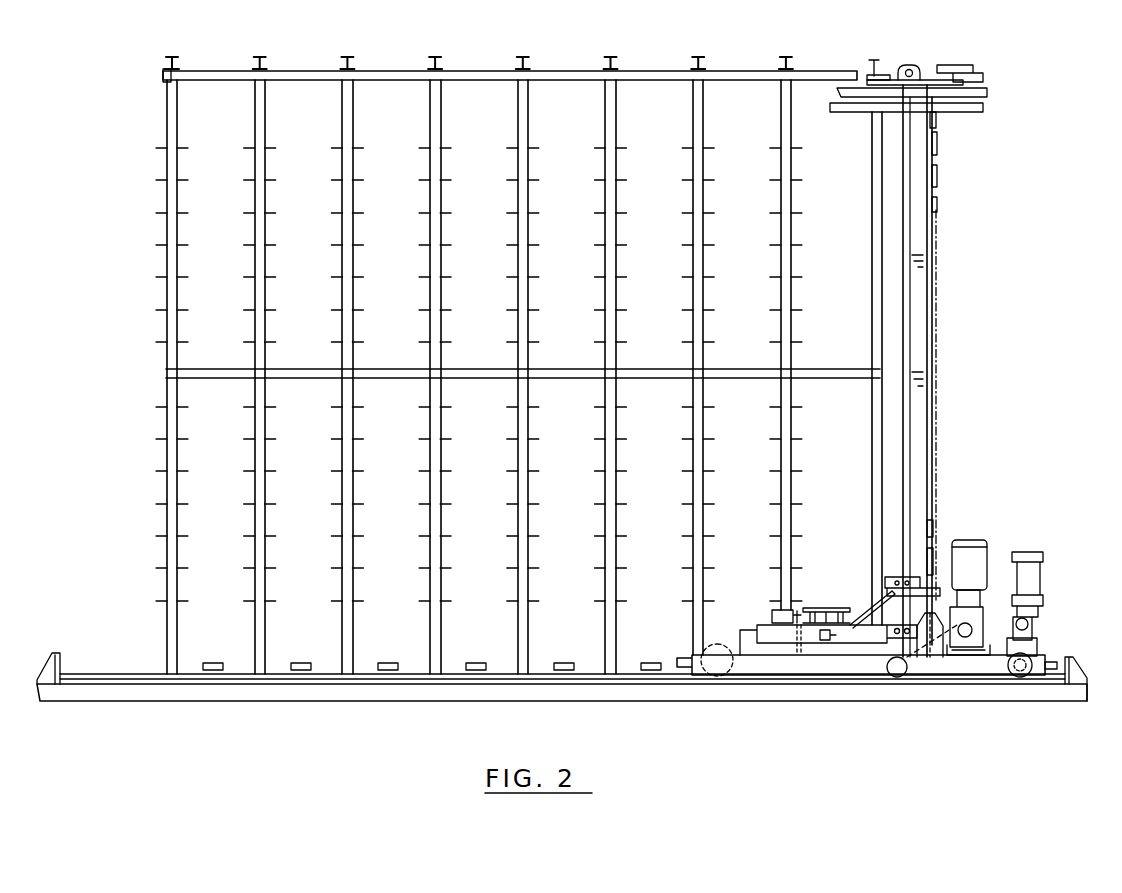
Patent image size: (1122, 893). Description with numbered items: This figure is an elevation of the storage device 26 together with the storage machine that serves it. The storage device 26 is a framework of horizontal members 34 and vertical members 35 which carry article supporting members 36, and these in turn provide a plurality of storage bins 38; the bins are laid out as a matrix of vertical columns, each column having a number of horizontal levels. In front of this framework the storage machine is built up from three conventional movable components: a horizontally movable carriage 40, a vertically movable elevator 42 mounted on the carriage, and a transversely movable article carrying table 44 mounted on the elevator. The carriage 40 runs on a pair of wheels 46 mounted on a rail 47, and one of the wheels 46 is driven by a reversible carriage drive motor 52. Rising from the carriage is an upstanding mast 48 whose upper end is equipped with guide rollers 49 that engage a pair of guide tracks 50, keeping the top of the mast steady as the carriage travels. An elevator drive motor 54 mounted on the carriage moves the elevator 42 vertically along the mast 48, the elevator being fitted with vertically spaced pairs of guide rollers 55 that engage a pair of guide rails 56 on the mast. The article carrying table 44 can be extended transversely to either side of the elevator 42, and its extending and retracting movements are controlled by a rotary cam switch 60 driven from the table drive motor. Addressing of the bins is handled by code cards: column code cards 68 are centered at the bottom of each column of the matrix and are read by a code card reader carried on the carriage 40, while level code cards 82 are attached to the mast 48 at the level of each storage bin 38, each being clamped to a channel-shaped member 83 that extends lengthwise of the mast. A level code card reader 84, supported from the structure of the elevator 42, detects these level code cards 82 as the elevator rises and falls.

The storage device 26 is at (158, 277).
The horizontal members 34 is at (392, 69).
The vertical members 35 is at (166, 125).
The article supporting members 36 is at (257, 150).
The storage bins 38 is at (323, 213).
The carriage 40 is at (838, 665).
The elevator 42 is at (866, 658).
The article carrying table 44 is at (832, 592).
The wheels 46 is at (717, 646).
The rail 47 is at (622, 678).
The mast 48 is at (927, 353).
The guide rollers 49 is at (952, 64).
The guide tracks 50 is at (975, 77).
The carriage drive motor 52 is at (1033, 575).
The elevator drive motor 54 is at (978, 557).
The guide rollers 55 is at (900, 577).
The guide rails 56 is at (913, 238).
The cam switch 60 is at (770, 615).
The column code cards 68 is at (213, 662).
The level code cards 82 is at (938, 144).
The channel-shaped member 83 is at (936, 120).
The level code card reader 84 is at (942, 580).